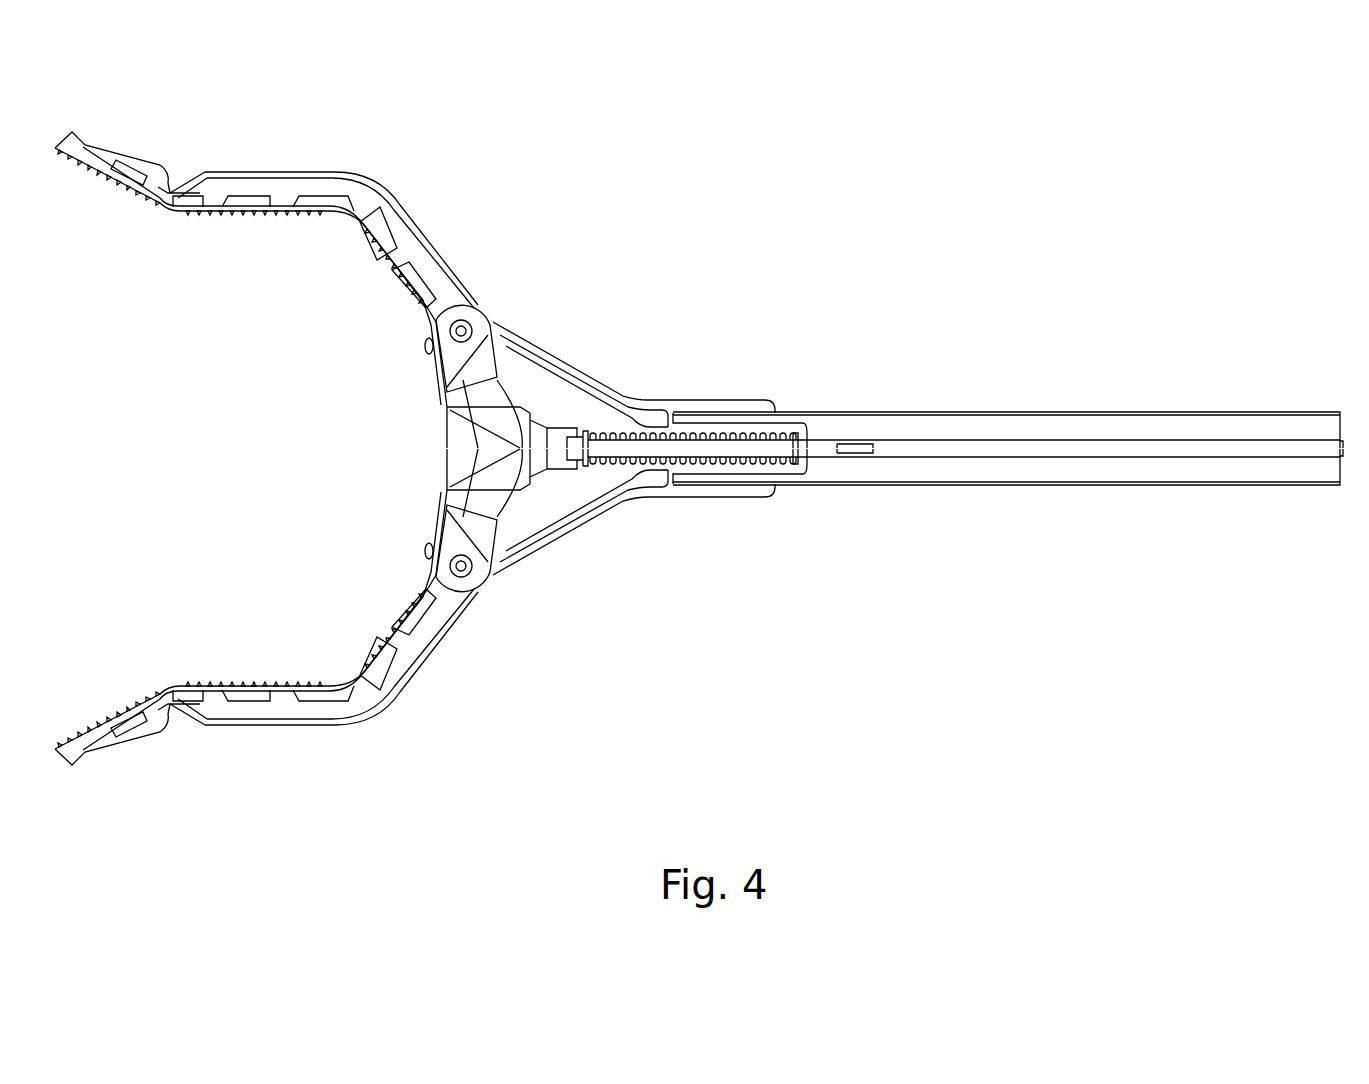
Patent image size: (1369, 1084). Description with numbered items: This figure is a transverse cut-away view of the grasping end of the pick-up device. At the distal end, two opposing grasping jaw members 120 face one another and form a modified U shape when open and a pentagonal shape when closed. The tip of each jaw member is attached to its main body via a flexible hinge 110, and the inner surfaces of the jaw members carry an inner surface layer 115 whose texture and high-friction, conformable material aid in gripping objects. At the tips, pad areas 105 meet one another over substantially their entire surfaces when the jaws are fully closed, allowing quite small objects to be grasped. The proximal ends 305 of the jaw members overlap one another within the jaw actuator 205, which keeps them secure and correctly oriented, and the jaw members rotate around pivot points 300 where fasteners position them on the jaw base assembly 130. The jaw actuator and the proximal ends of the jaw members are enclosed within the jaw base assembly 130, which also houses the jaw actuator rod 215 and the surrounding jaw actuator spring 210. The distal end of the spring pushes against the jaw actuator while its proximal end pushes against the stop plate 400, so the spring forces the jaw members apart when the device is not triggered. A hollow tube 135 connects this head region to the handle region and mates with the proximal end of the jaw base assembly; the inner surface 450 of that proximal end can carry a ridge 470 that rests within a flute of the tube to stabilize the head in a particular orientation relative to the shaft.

The pad areas 105 is at (87, 175).
The flexible hinge 110 is at (172, 192).
The inner surface layer 115 is at (287, 215).
The grasping jaw members 120 is at (341, 175).
The jaw base assembly 130 is at (572, 358).
The hollow tube 135 is at (1010, 412).
The jaw actuator 205 is at (533, 488).
The jaw actuator spring 210 is at (606, 432).
The jaw actuator rod 215 is at (623, 450).
The pivot points 300 is at (462, 330).
The proximal ends 305 is at (482, 440).
The stop plate 400 is at (790, 473).
The inner surface of the proximal end of the jaw base assembly 450 is at (735, 495).
The ridge 470 is at (687, 420).